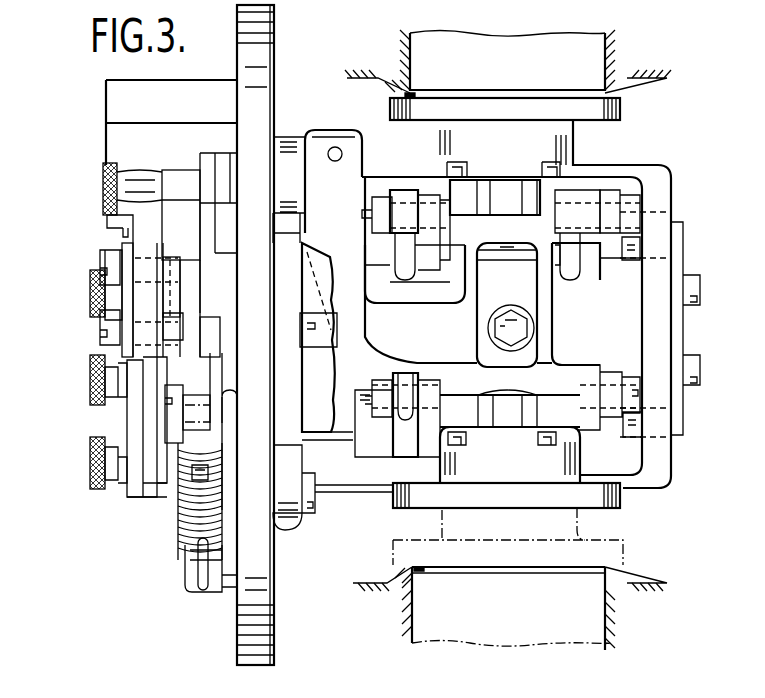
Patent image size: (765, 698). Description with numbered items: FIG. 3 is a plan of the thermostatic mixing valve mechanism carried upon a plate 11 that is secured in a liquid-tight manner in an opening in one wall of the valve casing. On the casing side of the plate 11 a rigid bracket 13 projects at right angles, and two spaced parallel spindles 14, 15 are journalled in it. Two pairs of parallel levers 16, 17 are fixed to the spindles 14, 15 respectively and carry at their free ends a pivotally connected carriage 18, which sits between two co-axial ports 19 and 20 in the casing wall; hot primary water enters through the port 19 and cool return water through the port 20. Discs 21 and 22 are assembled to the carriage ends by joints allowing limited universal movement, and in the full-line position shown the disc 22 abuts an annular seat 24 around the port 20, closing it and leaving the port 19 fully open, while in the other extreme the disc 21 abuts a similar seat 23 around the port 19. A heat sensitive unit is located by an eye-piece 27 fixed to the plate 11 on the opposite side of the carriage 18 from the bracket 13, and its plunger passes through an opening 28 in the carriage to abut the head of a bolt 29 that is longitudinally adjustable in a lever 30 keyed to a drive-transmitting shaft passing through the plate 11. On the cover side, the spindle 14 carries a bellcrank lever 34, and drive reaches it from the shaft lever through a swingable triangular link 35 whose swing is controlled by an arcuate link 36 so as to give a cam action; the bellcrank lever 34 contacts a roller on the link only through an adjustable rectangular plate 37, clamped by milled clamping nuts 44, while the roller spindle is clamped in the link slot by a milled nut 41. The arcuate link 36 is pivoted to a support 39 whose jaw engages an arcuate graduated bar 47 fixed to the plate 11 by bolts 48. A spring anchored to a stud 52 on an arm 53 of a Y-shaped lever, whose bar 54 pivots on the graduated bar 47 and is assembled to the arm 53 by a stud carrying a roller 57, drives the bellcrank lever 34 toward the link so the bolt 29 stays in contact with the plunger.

The plate 11 is at (267, 55).
The rigid bracket 13 is at (660, 273).
The spindle 14 is at (630, 262).
The spindle 15 is at (355, 448).
The levers 16 is at (407, 190).
The levers 17 is at (392, 487).
The carriage 18 is at (573, 230).
The port 19 is at (500, 665).
The port 20 is at (512, 28).
The disc 21 is at (620, 118).
The disc 22 is at (617, 515).
The seat 23 is at (412, 94).
The annular seat 24 is at (418, 567).
The eye-piece 27 is at (338, 432).
The opening 28 is at (485, 300).
The bolt 29 is at (512, 330).
The lever 30 is at (348, 138).
The bellcrank lever 34 is at (127, 497).
The triangular link 35 is at (120, 243).
The arcuate link 36 is at (105, 212).
The rectangular plate 37 is at (143, 500).
The support 39 is at (185, 175).
The milled nut 41 is at (90, 295).
The milled clamping nuts 44 is at (90, 380).
The arcuate bar 47 is at (207, 160).
The bolts 48 is at (177, 313).
The stud 52 is at (188, 584).
The arm 53 is at (230, 587).
The bar 54 is at (212, 342).
The roller 57 is at (195, 393).